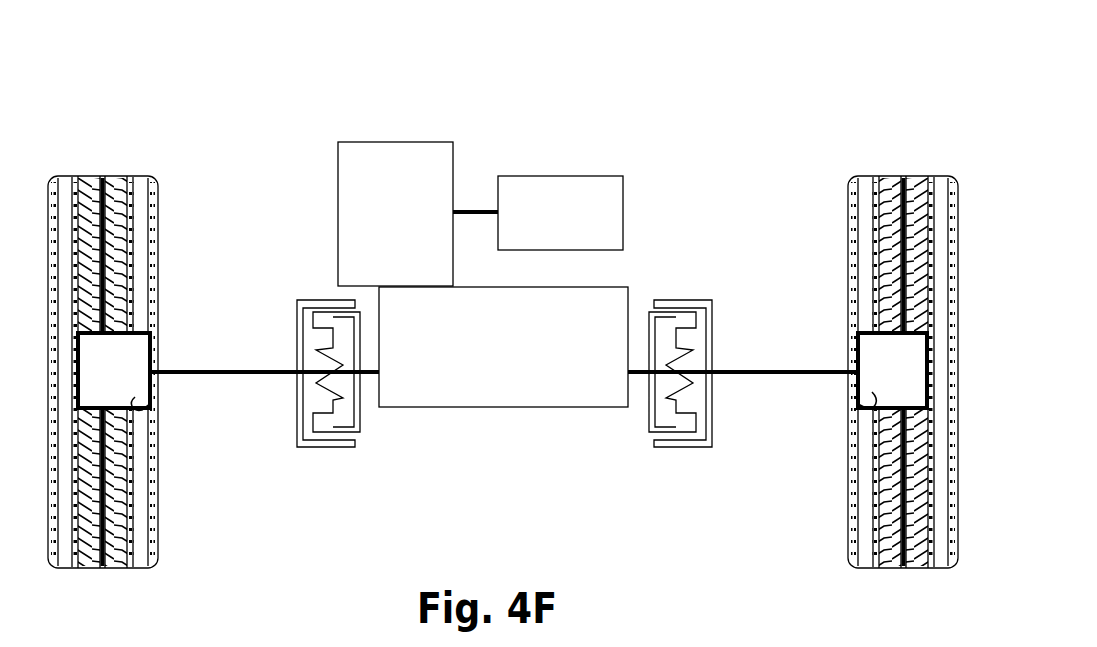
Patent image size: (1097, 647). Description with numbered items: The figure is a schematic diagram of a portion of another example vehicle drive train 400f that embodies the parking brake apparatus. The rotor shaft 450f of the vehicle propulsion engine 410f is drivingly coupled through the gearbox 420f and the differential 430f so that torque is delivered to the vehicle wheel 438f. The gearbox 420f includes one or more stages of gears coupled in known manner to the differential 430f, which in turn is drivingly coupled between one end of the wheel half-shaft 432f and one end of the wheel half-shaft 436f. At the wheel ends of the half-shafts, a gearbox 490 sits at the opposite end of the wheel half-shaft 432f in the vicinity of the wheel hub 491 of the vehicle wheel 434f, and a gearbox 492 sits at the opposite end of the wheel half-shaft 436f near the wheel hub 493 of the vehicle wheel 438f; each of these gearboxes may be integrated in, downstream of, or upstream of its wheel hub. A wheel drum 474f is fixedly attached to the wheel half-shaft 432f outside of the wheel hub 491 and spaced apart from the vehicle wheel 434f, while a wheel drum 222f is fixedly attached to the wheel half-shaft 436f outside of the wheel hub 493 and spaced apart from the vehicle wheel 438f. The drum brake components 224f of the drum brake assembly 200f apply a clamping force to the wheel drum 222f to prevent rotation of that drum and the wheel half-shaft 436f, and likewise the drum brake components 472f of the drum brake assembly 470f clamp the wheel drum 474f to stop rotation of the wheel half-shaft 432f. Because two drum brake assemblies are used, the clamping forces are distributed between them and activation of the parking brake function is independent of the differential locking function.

The vehicle drive train 400f is at (836, 84).
The vehicle propulsion engine 410f is at (560, 176).
The gearbox 420f is at (397, 142).
The rotor shaft 450f is at (473, 211).
The differential 430f is at (628, 302).
The wheel half-shaft 432f is at (229, 374).
The wheel half-shaft 436f is at (750, 374).
The vehicle wheel 434f is at (158, 518).
The vehicle wheel 438f is at (850, 513).
The gearbox 490 is at (130, 355).
The wheel hub 491 is at (135, 397).
The gearbox 492 is at (878, 352).
The wheel hub 493 is at (872, 392).
The drum brake assembly 470f is at (312, 394).
The drum brake components 472f is at (324, 382).
The wheel drum 474f is at (297, 320).
The drum brake assembly 200f is at (728, 355).
The wheel drum 222f is at (698, 307).
The drum brake components 224f is at (686, 392).